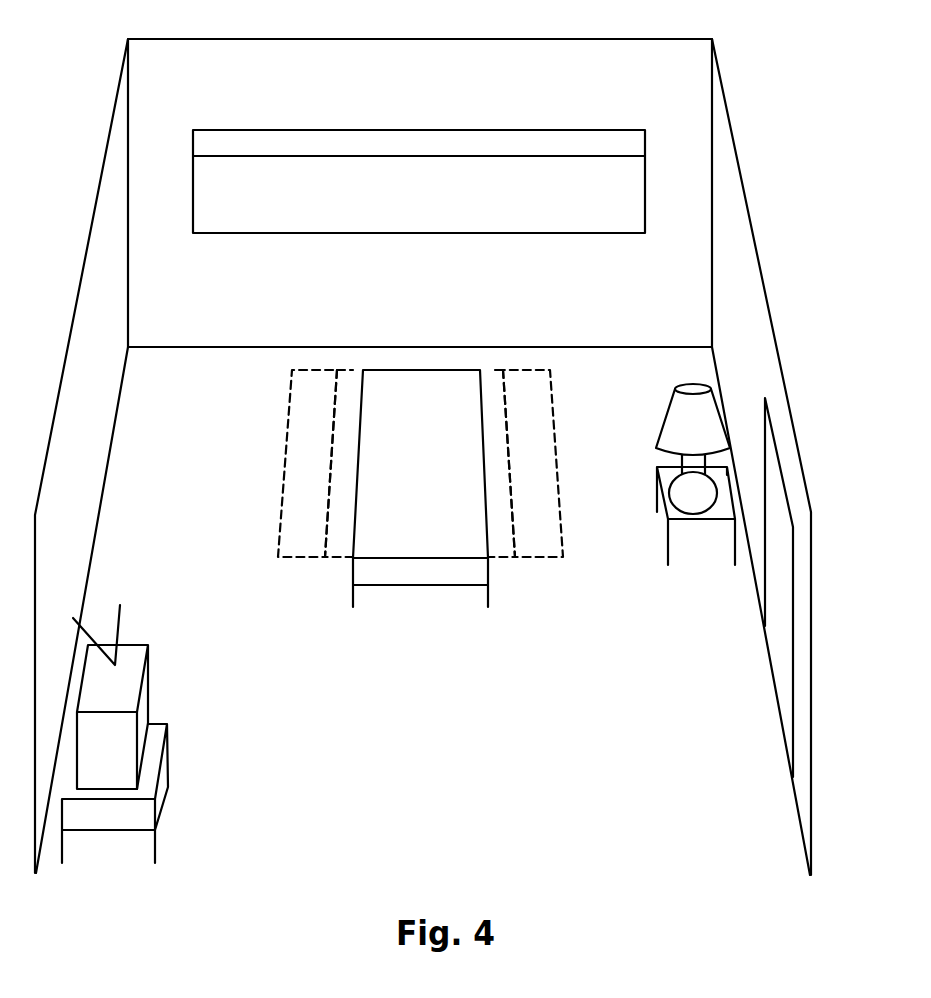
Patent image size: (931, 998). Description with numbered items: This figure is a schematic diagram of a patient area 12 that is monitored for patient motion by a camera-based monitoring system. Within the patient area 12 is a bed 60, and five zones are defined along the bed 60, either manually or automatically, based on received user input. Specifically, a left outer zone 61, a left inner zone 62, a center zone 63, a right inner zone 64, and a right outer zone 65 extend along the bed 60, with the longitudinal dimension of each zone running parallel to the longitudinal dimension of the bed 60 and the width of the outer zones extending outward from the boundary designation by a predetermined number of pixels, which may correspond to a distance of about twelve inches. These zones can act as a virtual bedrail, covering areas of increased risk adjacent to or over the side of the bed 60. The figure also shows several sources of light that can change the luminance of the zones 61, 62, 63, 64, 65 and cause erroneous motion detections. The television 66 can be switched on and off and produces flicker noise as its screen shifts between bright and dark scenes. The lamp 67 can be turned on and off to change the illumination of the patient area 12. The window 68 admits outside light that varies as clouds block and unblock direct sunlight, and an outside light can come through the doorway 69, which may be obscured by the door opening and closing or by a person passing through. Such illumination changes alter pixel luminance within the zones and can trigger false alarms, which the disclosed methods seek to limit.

The patient area 12 is at (68, 176).
The bed 60 is at (417, 604).
The left outer zone 61 is at (307, 375).
The left inner zone 62 is at (350, 375).
The center zone 63 is at (422, 377).
The right inner zone 64 is at (492, 375).
The right outer zone 65 is at (537, 375).
The television 66 is at (150, 687).
The lamp 67 is at (665, 410).
The window 68 is at (328, 233).
The doorway 69 is at (794, 672).